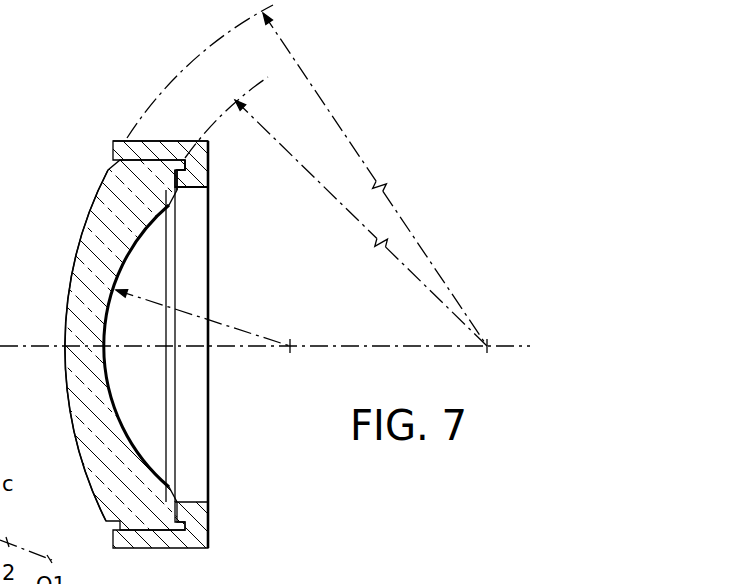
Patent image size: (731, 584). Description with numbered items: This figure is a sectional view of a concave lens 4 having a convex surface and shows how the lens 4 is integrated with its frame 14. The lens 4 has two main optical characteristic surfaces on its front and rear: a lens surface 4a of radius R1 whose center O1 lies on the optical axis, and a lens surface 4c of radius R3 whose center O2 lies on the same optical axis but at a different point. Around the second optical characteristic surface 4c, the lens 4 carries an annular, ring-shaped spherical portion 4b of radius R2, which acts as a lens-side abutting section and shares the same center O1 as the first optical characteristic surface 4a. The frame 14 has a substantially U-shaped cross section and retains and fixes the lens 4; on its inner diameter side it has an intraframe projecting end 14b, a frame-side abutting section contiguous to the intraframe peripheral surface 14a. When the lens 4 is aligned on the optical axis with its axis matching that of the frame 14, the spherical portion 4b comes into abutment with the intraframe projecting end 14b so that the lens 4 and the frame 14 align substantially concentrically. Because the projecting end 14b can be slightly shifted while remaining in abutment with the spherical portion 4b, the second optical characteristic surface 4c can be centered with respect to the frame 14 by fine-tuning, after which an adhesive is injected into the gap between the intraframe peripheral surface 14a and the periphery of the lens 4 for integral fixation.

The lens 4 is at (50, 238).
The first optical characteristic surface 4a is at (65, 327).
The spherical portion 4b is at (187, 164).
The second optical characteristic surface 4c is at (136, 246).
The frame 14 is at (108, 113).
The intraframe peripheral surface 14a is at (169, 150).
The intraframe projecting end 14b is at (177, 189).
The radius of first optical characteristic surface R1 is at (307, 175).
The radius of ring-shaped spherical surface R2 is at (336, 211).
The radius of second optical characteristic surface R3 is at (203, 318).
The center of first optical characteristic surface O1 is at (488, 361).
The center of second optical characteristic surface O2 is at (293, 361).